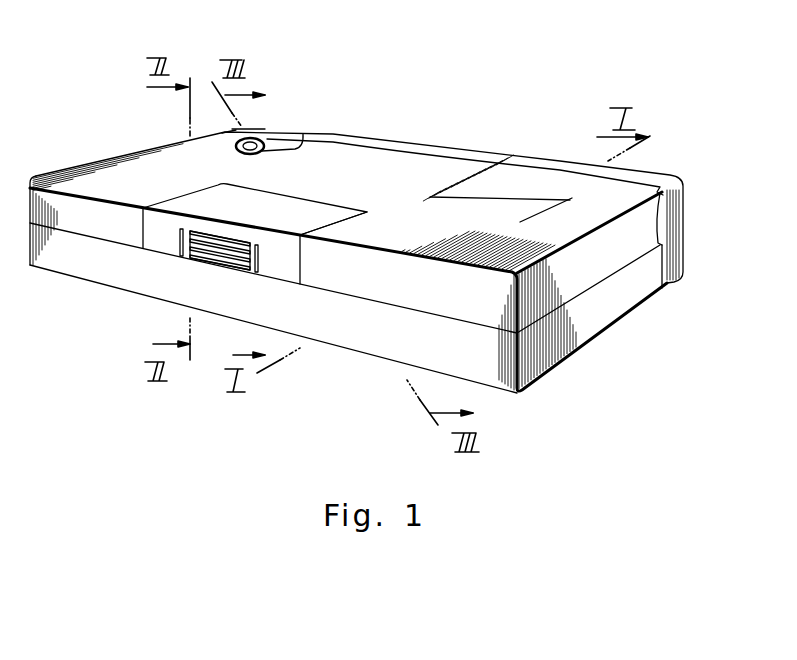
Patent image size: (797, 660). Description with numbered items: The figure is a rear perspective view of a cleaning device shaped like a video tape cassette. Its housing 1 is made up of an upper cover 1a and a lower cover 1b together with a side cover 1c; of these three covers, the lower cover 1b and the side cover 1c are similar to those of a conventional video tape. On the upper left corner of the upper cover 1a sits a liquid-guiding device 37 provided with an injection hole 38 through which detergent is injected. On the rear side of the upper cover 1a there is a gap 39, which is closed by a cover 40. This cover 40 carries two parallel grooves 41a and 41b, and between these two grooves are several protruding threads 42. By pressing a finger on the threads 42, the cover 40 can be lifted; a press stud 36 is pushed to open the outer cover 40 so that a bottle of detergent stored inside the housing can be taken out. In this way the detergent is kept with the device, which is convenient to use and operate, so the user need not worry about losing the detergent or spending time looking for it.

The housing 1 is at (379, 223).
The upper cover 1a is at (495, 172).
The lower cover 1b is at (603, 325).
The side cover 1c is at (685, 253).
The press stud 36 is at (237, 266).
The liquid-guiding device 37 is at (268, 148).
The injection hole 38 is at (258, 141).
The gap 39 is at (318, 213).
The cover 40 is at (187, 200).
The parallel groove 41a is at (180, 240).
The parallel groove 41b is at (260, 260).
The protruding threads 42 is at (210, 262).